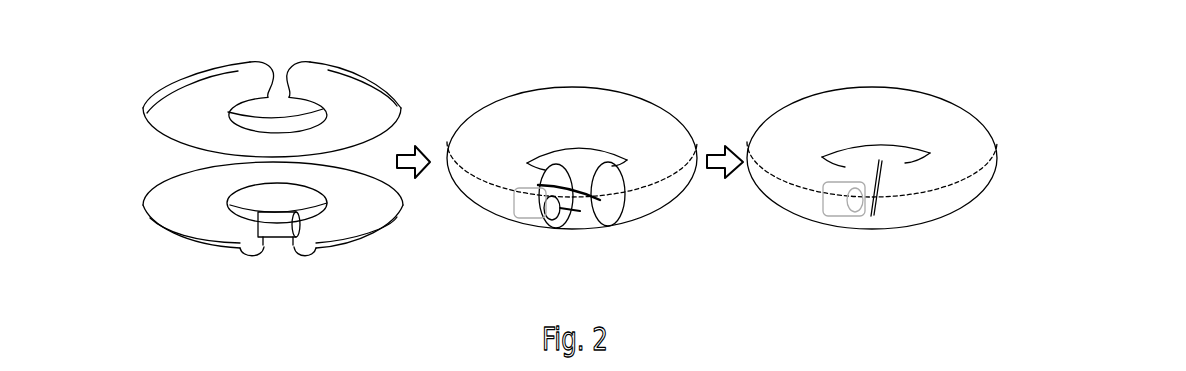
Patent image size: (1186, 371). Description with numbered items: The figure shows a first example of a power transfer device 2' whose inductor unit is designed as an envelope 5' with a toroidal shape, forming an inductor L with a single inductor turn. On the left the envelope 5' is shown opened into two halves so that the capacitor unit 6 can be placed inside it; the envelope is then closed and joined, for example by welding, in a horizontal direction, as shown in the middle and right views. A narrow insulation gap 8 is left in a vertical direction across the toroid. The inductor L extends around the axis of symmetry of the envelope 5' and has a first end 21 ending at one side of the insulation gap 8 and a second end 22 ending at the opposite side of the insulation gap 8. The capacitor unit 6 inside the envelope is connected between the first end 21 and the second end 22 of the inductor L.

The power transfer device 2' is at (570, 154).
The envelope 5' is at (722, 131).
The capacitor unit 6 is at (277, 226).
The first end 21 is at (565, 224).
The second end 22 is at (611, 212).
The insulation gap 8 is at (872, 212).
The inductor L is at (953, 120).